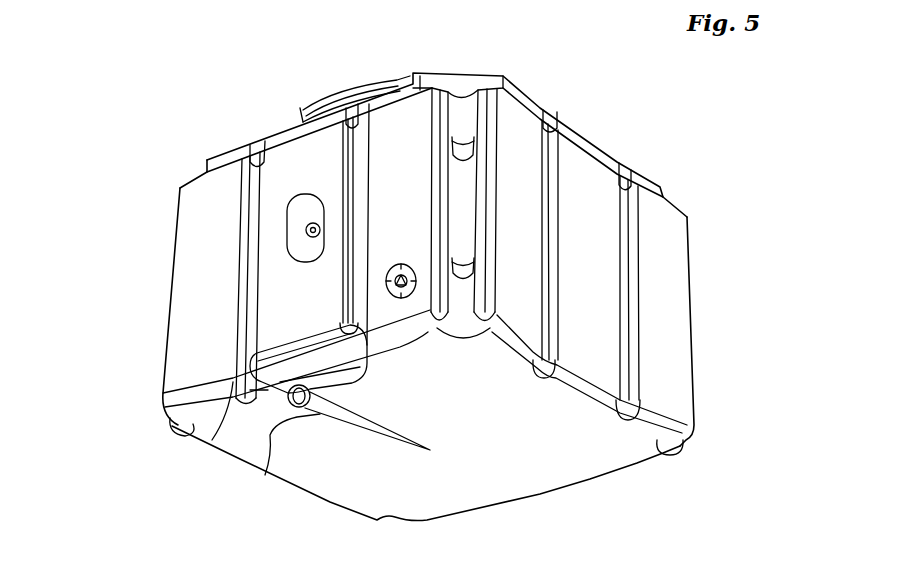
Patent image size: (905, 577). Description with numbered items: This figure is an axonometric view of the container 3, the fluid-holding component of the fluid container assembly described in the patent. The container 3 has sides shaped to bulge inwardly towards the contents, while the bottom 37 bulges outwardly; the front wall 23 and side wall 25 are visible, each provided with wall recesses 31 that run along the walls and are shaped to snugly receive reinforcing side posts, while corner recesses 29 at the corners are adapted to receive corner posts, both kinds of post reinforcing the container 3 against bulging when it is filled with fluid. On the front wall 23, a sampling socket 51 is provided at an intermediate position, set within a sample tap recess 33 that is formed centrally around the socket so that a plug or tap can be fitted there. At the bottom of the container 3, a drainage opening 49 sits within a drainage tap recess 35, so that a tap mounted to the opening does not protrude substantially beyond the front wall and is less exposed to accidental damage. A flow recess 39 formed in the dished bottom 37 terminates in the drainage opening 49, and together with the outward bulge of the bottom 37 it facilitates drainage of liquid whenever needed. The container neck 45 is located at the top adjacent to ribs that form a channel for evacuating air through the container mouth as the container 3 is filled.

The container 3 is at (692, 303).
The front wall 23 is at (287, 163).
The side wall 25 is at (657, 233).
The corner recess 29 is at (463, 118).
The wall recess 31 is at (550, 160).
The sample tap recess 33 is at (302, 213).
The drainage tap recess 35 is at (212, 440).
The bottom 37 is at (345, 483).
The flow recess 39 is at (265, 475).
The container neck 45 is at (317, 110).
The drainage opening 49 is at (253, 374).
The sampling socket 51 is at (306, 230).